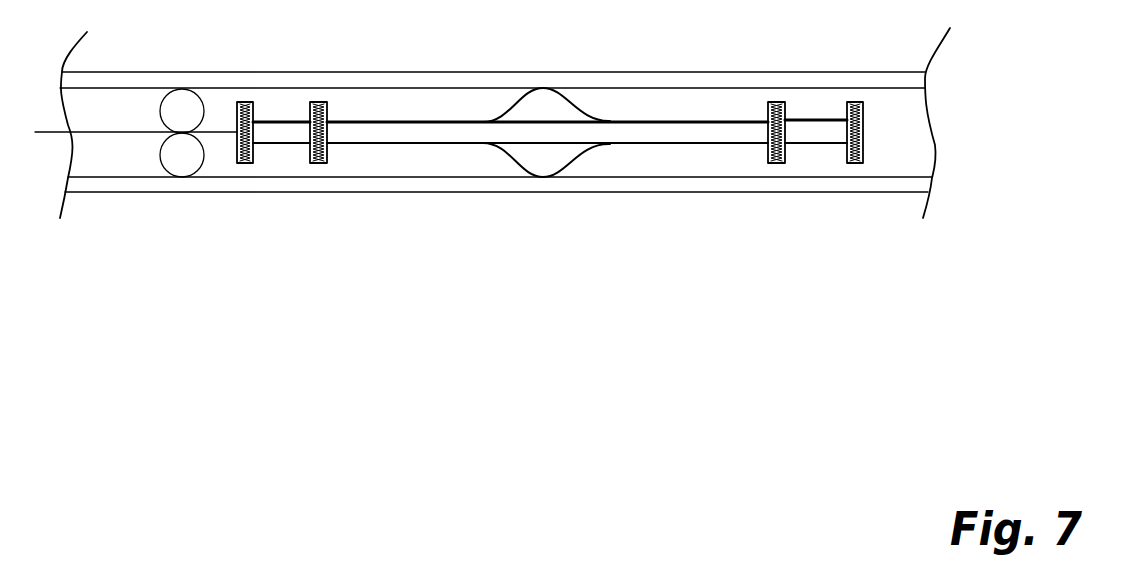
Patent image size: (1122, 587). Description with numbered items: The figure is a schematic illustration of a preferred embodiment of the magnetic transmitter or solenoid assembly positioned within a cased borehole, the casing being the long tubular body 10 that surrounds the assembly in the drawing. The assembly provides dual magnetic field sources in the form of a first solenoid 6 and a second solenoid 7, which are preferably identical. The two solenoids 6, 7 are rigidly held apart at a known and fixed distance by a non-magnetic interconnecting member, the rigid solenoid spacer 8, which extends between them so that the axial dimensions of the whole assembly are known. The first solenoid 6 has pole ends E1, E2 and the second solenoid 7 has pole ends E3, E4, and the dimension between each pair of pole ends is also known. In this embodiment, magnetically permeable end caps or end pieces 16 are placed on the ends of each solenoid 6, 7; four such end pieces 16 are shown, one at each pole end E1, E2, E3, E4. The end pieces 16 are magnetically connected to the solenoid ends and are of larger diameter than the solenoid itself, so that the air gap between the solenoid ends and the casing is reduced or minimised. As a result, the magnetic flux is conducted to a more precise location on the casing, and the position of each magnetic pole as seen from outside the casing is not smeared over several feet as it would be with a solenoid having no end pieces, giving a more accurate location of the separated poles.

The first solenoid 6 is at (275, 133).
The second solenoid 7 is at (807, 133).
The rigid solenoid spacer 8 is at (422, 133).
The tube body 10 is at (672, 192).
The end piece 16 is at (601, 160).
The pole end E1 is at (863, 145).
The pole end E2 is at (785, 145).
The pole end E3 is at (327, 145).
The pole end E4 is at (253, 145).